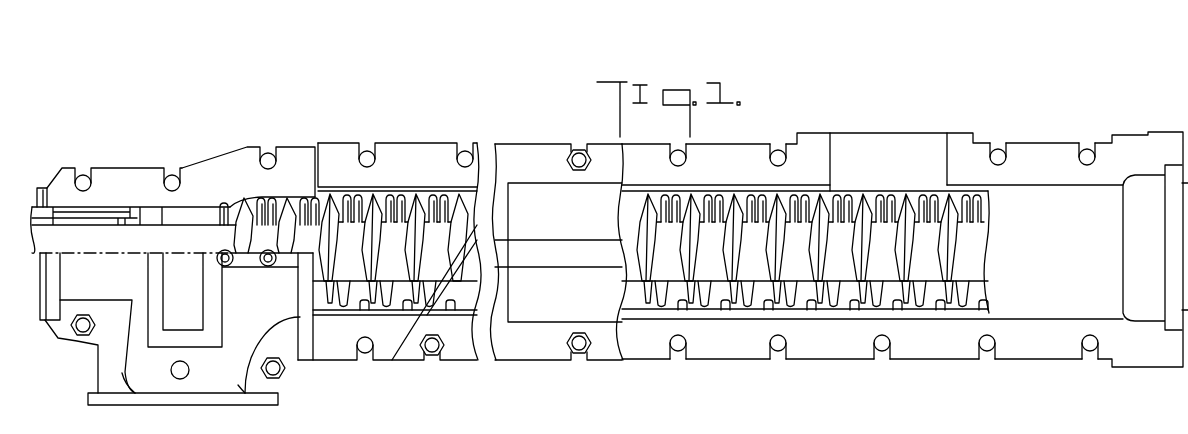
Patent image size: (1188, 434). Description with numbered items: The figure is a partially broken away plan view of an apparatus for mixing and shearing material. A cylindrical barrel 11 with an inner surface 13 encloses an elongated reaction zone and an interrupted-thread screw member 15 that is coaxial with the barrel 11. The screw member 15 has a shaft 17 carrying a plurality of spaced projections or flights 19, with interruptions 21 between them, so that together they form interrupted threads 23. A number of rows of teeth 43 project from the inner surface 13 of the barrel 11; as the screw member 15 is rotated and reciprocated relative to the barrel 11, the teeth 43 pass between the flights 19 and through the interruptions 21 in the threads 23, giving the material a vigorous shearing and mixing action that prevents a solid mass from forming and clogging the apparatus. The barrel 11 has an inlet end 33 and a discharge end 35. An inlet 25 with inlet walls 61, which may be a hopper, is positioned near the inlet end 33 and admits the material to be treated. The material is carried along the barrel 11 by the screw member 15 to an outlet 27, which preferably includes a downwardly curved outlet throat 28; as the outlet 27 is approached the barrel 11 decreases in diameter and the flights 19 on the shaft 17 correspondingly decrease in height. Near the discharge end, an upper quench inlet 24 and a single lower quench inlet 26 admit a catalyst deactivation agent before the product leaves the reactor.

The cylindrical barrel 11 is at (412, 191).
The inner surface 13 is at (429, 197).
The interrupted-thread screw member 15 is at (345, 228).
The shaft 17 is at (731, 270).
The flights 19 is at (378, 222).
The interruptions 21 is at (780, 272).
The interrupted threads 23 is at (683, 250).
The upper quench inlet 24 is at (278, 216).
The inlet 25 is at (918, 145).
The lower quench inlet 26 is at (179, 380).
The outlet 27 is at (227, 368).
The outlet throat 28 is at (133, 395).
The inlet end 33 is at (977, 307).
The discharge end 35 is at (222, 158).
The teeth 43 is at (365, 306).
The inlet walls 61 is at (832, 158).